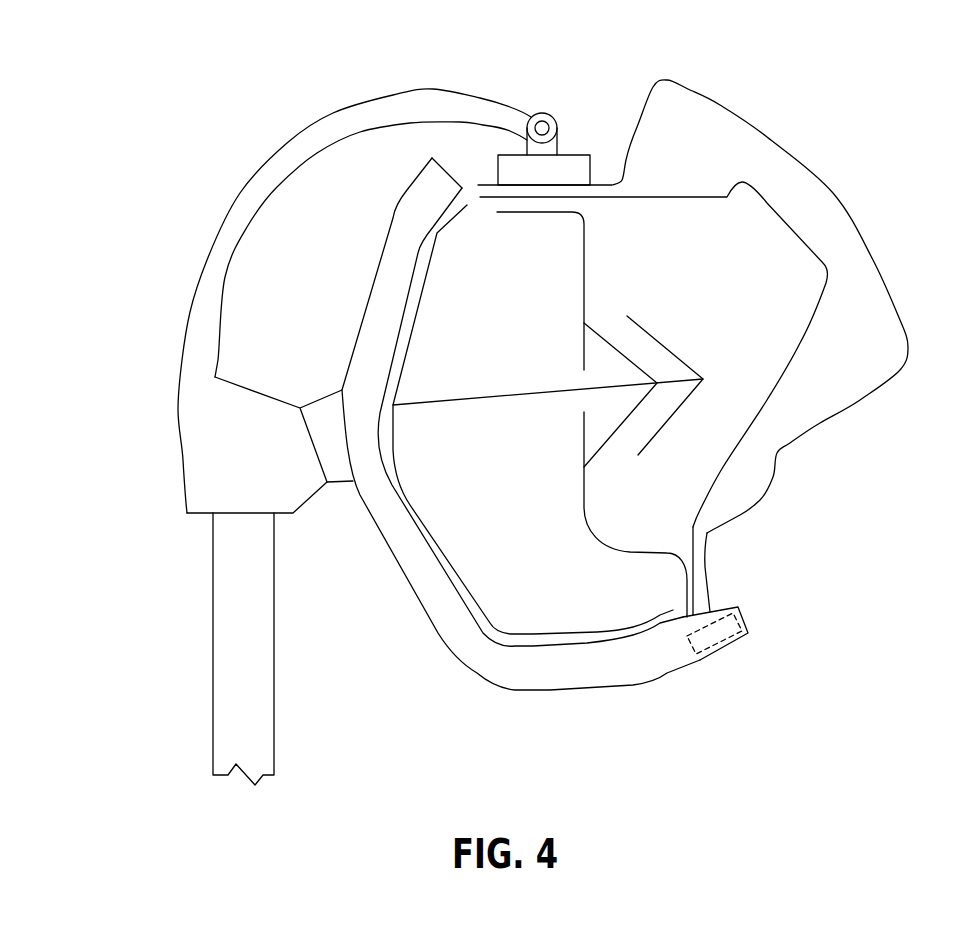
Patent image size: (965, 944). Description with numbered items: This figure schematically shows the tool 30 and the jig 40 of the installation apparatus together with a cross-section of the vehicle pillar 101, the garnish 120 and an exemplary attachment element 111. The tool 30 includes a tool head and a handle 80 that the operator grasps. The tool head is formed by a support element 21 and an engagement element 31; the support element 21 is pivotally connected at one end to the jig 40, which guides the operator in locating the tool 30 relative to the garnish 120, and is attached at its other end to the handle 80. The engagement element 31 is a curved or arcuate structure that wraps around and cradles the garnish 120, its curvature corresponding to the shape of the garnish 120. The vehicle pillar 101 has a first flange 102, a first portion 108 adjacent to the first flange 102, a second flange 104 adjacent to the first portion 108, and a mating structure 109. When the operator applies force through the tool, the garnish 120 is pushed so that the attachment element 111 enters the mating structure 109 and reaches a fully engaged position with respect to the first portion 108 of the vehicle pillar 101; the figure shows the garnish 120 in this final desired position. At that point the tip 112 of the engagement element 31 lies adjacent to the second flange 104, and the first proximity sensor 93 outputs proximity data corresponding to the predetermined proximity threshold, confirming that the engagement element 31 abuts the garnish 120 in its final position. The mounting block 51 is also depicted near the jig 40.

The support element 21 is at (190, 312).
The tool 30 is at (145, 495).
The engagement element 31 is at (558, 693).
The jig 40 is at (583, 119).
The mount block 51 is at (592, 155).
The handle 80 is at (218, 662).
The first proximity sensor 93 is at (690, 654).
The vehicle pillar 101 is at (870, 210).
The first flange 102 is at (513, 213).
The second flange 104 is at (710, 582).
The first portion 108 is at (585, 507).
The mating structure 109 is at (583, 365).
The attachment element 111 is at (670, 343).
The tip 112 is at (748, 635).
The garnish 120 is at (597, 630).